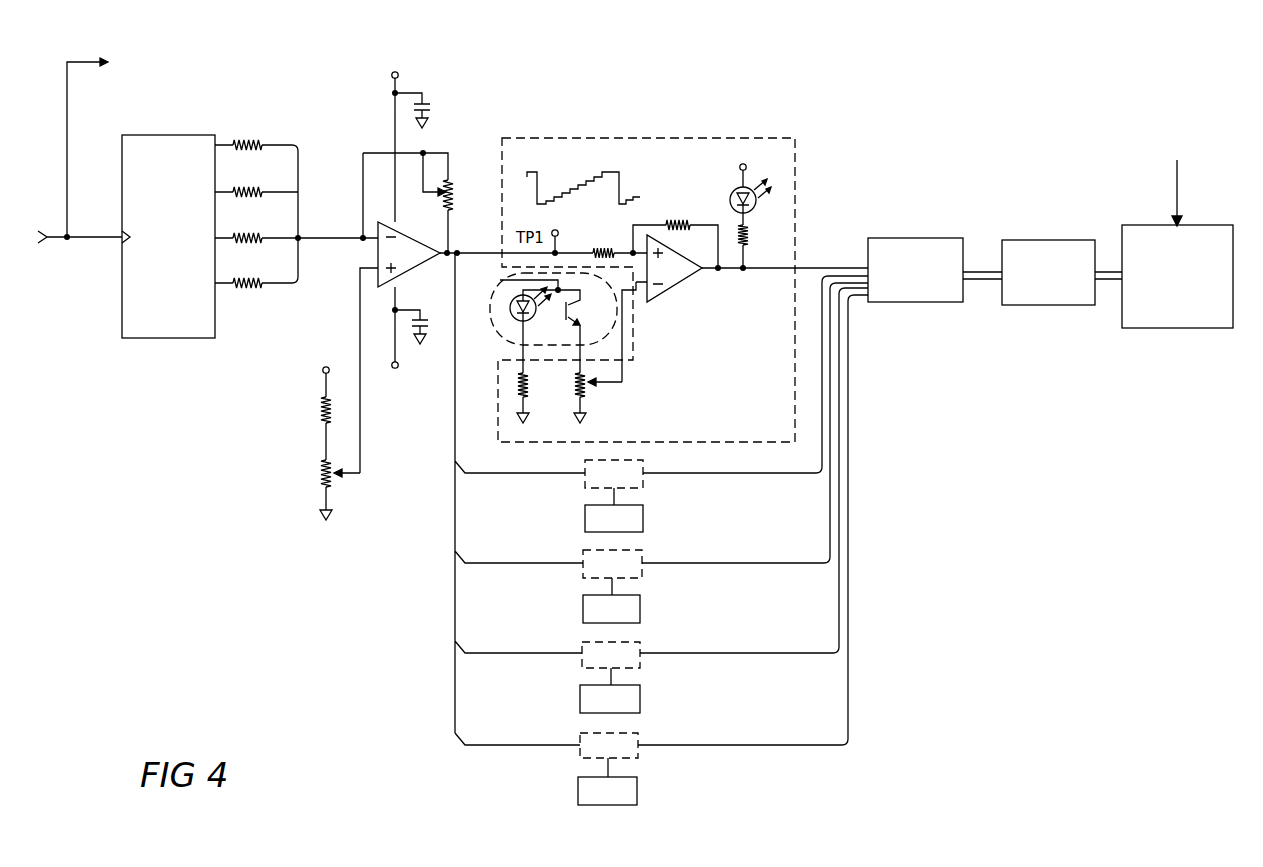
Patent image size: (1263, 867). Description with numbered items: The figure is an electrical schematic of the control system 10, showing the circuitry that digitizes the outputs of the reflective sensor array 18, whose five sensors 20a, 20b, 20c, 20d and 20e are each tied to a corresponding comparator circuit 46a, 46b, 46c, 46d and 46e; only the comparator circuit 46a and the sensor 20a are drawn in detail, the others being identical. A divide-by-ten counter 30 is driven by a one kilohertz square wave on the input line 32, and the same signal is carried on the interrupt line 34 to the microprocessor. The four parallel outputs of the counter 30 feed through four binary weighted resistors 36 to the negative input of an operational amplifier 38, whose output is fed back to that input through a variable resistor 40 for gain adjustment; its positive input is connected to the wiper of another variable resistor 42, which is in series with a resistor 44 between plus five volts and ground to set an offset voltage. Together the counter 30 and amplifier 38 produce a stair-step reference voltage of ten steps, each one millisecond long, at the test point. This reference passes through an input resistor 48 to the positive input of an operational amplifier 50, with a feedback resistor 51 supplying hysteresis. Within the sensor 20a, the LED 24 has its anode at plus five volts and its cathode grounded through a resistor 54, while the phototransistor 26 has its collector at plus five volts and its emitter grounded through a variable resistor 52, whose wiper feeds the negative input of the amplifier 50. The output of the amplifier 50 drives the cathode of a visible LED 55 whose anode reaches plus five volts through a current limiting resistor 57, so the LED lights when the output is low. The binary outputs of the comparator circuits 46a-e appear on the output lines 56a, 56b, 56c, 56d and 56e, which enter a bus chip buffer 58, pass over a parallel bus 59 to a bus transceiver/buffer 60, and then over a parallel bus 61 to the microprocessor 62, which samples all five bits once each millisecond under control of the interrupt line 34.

The control system 10 is at (586, 96).
The linear array of reflective light sensors 18 is at (473, 346).
The reflective sensor 20a is at (498, 339).
The reflective sensor 20b is at (585, 518).
The reflective sensor 20c is at (583, 608).
The reflective sensor 20d is at (580, 700).
The reflective sensor 20e is at (578, 788).
The LED 24 is at (511, 306).
The phototransistor 26 is at (608, 315).
The divide-by-ten counter 30 is at (178, 339).
The input line 32 is at (87, 241).
The interrupt line 34 is at (68, 113).
The binary weighted resistors 36 is at (260, 130).
The operational amplifier 38 is at (406, 271).
The variable resistor 40 is at (458, 188).
The variable resistor 42 is at (316, 477).
The resistor 44 is at (316, 413).
The comparator circuit 46a is at (646, 138).
The comparator circuit 46b is at (650, 468).
The comparator circuit 46c is at (648, 558).
The comparator circuit 46d is at (646, 646).
The comparator circuit 46e is at (645, 737).
The input resistor 48 is at (611, 246).
The operational amplifier 50 is at (684, 277).
The feedback resistor 51 is at (686, 222).
The variable resistor 52 is at (592, 387).
The resistor 54 is at (527, 386).
The light emitting diode 55 is at (758, 205).
The comparator circuit output line 56a is at (817, 268).
The comparator circuit output line 56b is at (822, 330).
The comparator circuit output line 56c is at (830, 376).
The comparator circuit output line 56d is at (841, 380).
The comparator circuit output line 56e is at (850, 416).
The current limiting resistor 57 is at (751, 238).
The bus chip buffer 58 is at (906, 238).
The parallel bus 59 is at (985, 269).
The bus transceiver/buffer 60 is at (1047, 240).
The parallel bus 61 is at (1110, 269).
The microprocessor 62 is at (1172, 329).